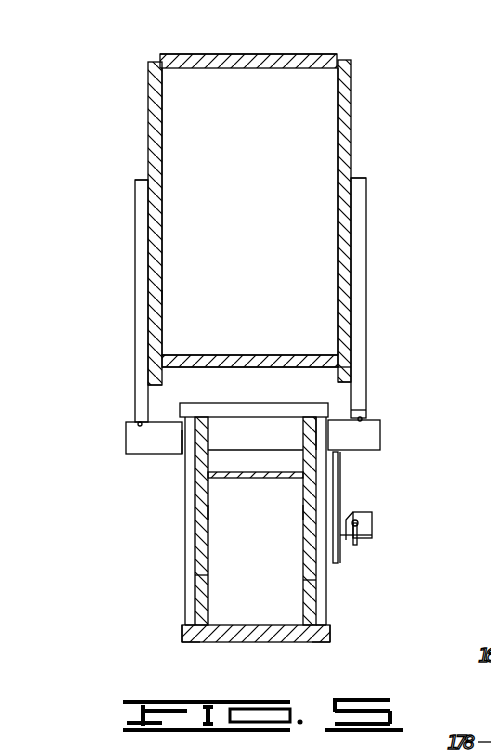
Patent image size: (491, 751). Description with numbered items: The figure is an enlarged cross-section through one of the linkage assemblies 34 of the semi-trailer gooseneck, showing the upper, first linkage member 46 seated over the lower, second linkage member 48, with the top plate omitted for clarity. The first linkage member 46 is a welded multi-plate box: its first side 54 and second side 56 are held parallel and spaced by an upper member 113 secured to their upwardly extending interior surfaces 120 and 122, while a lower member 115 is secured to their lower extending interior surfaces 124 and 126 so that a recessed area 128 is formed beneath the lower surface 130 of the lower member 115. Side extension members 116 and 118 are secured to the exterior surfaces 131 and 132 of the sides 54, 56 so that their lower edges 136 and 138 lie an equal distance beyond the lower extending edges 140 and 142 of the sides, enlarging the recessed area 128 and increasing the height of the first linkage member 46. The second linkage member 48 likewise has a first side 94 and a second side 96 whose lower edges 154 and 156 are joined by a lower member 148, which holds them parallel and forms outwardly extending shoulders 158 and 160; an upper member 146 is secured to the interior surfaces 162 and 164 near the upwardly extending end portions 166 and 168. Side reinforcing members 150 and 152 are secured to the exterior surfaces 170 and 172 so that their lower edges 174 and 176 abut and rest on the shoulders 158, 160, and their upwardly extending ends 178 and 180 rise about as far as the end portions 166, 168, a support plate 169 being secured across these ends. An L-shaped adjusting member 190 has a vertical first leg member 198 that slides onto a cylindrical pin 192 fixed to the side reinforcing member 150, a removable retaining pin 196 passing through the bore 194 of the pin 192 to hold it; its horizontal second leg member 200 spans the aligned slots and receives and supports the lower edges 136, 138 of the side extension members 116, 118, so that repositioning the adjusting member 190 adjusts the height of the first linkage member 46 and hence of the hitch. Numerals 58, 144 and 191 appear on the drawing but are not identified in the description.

The linkage assembly 34 is at (378, 333).
The first linkage member 46 is at (360, 102).
The second linkage member 48 is at (405, 543).
The first side 54 is at (351, 152).
The second side 56 is at (148, 145).
The top wall 58 is at (170, 54).
The first side 94 is at (316, 580).
The second side 96 is at (202, 582).
The upper member 113 is at (243, 52).
The lower member 115 is at (206, 354).
The side extension member 116 is at (366, 235).
The side extension member 118 is at (135, 275).
The upwardly extending interior surface 120 is at (338, 90).
The upwardly extending interior surface 122 is at (163, 88).
The lower extending interior surface 124 is at (270, 354).
The lower extending interior surface 126 is at (164, 288).
The recessed area 128 is at (263, 393).
The lower surface 130 is at (277, 368).
The exterior surface 131 is at (352, 290).
The exterior surface 132 is at (148, 232).
The lower edge 136 is at (362, 418).
The lower edge 138 is at (185, 433).
The lower extending edge 140 is at (348, 404).
The lower extending edge 142 is at (157, 386).
The top wall of lower housing 144 is at (203, 472).
The upper member 146 is at (228, 478).
The lower member 148 is at (218, 632).
The side reinforcing member 150 is at (323, 567).
The side reinforcing member 152 is at (185, 527).
The lower edge 154 is at (313, 643).
The lower edge 156 is at (195, 640).
The outwardly extending shoulder 158 is at (320, 628).
The outwardly extending shoulder 160 is at (192, 632).
The interior surface 162 is at (305, 514).
The interior surface 164 is at (210, 508).
The upwardly extending end portion 166 is at (305, 434).
The upwardly extending end portion 168 is at (208, 444).
The support plate 169 is at (346, 380).
The exterior surface 170 is at (317, 497).
The exterior surface 172 is at (203, 505).
The lower edge 174 is at (320, 624).
The lower edge 176 is at (192, 625).
The upwardly extending end 178 is at (322, 438).
The upwardly extending end 180 is at (139, 421).
The adjusting member 190 is at (398, 431).
The lower surface 191 is at (274, 367).
The pin 192 is at (358, 517).
The bore 194 is at (372, 515).
The removable retaining pin 196 is at (372, 526).
The first leg member 198 is at (341, 465).
The second leg member 200 is at (177, 448).